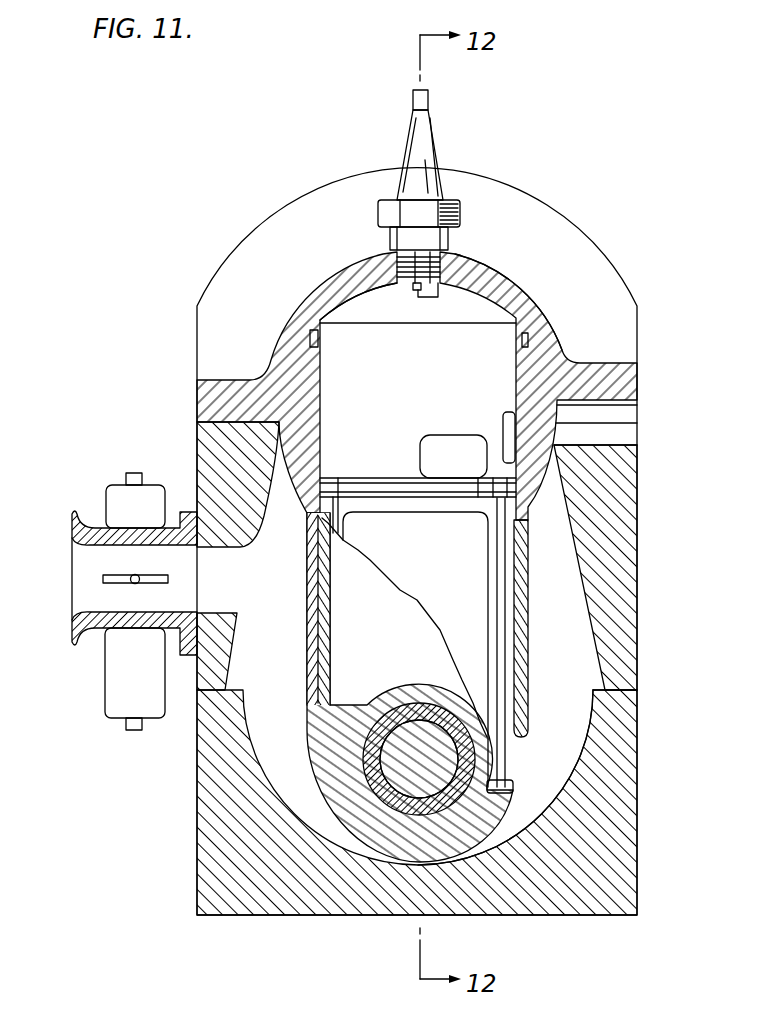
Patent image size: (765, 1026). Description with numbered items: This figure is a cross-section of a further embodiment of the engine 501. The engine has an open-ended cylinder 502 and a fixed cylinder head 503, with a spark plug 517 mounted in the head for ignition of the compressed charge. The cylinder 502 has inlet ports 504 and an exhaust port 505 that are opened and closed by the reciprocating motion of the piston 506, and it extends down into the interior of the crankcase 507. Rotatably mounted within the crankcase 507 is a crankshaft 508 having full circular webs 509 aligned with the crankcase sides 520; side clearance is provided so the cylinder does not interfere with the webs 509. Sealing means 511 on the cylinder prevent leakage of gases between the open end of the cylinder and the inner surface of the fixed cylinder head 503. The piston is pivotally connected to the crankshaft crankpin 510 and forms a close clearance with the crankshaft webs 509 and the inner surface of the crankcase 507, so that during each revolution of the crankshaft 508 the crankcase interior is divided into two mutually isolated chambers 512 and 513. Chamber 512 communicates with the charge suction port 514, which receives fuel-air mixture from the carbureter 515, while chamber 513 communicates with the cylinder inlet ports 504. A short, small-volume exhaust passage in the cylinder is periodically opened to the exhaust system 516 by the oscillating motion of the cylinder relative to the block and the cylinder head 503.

The engine 501 is at (582, 219).
The cylinder 502 is at (568, 364).
The cylinder head 503 is at (553, 345).
The inlet ports 504 is at (481, 461).
The exhaust port 505 is at (520, 428).
The piston 506 is at (474, 527).
The crankcase 507 is at (631, 568).
The crankshaft 508 is at (445, 765).
The webs 509 is at (310, 737).
The crankpin 510 is at (450, 795).
The sealing means 511 is at (540, 303).
The chamber 512 is at (265, 738).
The chamber 513 is at (572, 743).
The charge suction port 514 is at (237, 560).
The carbureter 515 is at (104, 706).
The exhaust system 516 is at (632, 433).
The spark plug 517 is at (433, 152).
The crankcase sides 520 is at (577, 703).